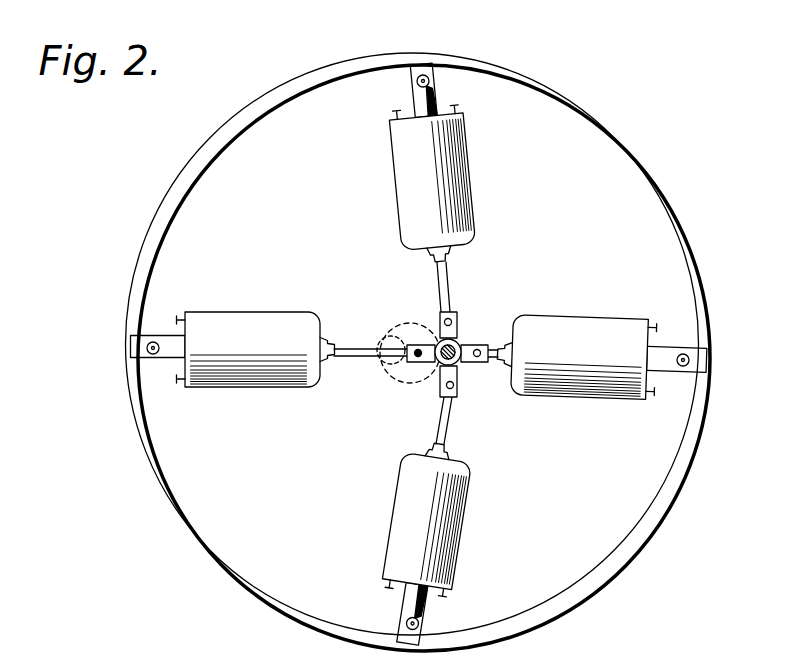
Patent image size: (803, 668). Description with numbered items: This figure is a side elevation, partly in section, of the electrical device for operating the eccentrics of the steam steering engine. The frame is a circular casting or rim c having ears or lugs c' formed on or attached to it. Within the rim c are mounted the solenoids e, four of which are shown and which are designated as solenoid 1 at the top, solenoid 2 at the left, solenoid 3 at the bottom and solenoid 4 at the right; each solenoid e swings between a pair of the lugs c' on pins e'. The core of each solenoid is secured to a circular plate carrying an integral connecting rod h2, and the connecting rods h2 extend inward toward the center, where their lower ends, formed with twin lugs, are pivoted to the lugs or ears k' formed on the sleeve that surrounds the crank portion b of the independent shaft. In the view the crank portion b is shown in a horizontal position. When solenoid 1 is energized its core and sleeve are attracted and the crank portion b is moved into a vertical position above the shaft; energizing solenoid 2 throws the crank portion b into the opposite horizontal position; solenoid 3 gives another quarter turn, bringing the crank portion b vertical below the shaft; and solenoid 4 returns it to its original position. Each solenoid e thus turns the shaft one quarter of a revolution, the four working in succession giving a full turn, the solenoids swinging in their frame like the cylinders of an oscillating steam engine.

The circular casting or rim c is at (418, 352).
The ears or lugs c' is at (419, 354).
The solenoids e is at (417, 350).
The pins e' is at (418, 351).
The solenoid 1 is at (427, 184).
The solenoid 2 is at (256, 362).
The solenoid 3 is at (433, 517).
The solenoid 4 is at (576, 345).
The connecting rod h2 is at (367, 352).
The lugs or ears k' is at (435, 354).
The crank portion b is at (447, 360).